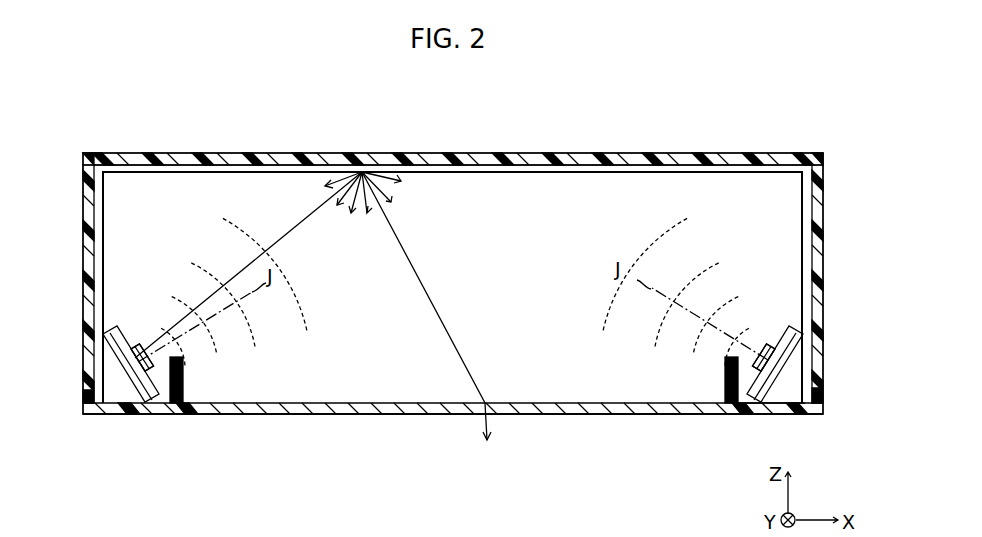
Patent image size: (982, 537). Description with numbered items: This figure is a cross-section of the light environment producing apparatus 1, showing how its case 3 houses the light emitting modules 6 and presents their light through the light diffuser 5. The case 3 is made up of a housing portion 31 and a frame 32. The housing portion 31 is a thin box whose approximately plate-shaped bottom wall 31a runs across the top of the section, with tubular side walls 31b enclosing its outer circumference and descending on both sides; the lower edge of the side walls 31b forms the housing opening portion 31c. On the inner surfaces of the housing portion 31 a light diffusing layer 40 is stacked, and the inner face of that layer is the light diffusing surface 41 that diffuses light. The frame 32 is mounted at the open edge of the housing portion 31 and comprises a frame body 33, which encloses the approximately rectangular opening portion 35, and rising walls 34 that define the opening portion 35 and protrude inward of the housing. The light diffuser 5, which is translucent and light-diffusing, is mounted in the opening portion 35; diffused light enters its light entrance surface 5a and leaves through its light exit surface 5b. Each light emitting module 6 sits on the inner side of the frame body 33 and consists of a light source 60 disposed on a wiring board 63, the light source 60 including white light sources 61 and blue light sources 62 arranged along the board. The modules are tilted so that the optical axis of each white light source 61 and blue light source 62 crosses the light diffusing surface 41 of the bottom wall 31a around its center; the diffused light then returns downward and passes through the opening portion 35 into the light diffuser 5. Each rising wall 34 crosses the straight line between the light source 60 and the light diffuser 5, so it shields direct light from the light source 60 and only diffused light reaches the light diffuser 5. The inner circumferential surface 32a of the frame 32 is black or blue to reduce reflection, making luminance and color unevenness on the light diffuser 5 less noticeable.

The light environment producing apparatus 1 is at (668, 100).
The case 3 is at (861, 433).
The light diffuser 5 is at (437, 410).
The light entrance surface 5a is at (257, 402).
The light exit surface 5b is at (203, 416).
The light emitting module 6 is at (172, 489).
The housing portion 31 is at (823, 397).
The bottom wall 31a is at (536, 160).
The side wall 31b is at (823, 285).
The housing opening portion 31c is at (315, 403).
The frame 32 is at (812, 408).
The inner circumferential surface 32a is at (184, 392).
The frame body 33 is at (762, 402).
The rising wall 34 is at (732, 412).
The opening portion 35 is at (187, 412).
The light diffusing layer 40 is at (778, 166).
The light diffusing surface 41 is at (733, 172).
The light source 60 is at (140, 463).
The white light source 61 is at (137, 372).
The blue light source 62 is at (429, 348).
The wiring board 63 is at (158, 402).